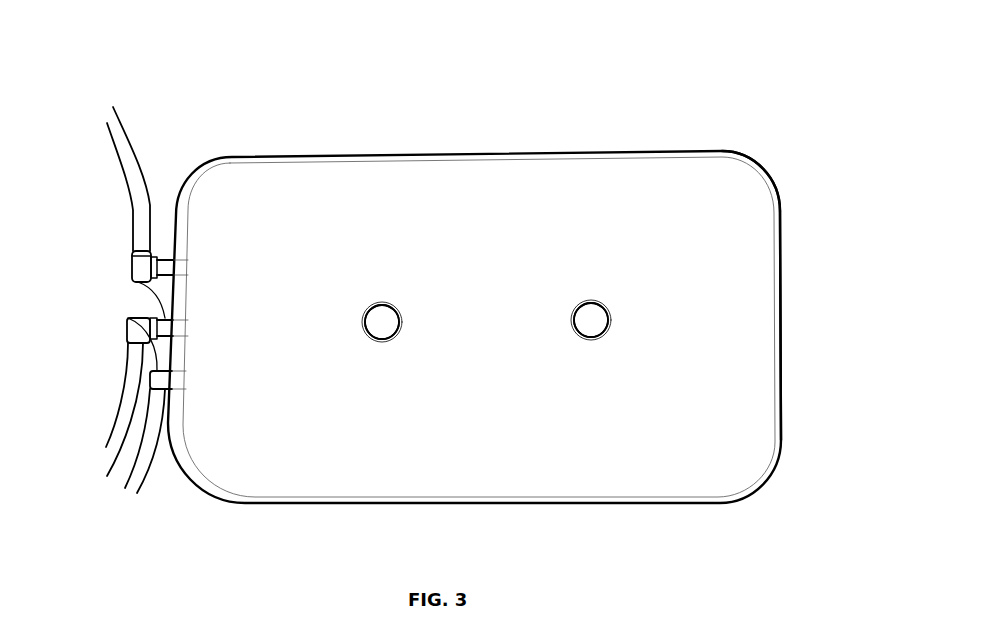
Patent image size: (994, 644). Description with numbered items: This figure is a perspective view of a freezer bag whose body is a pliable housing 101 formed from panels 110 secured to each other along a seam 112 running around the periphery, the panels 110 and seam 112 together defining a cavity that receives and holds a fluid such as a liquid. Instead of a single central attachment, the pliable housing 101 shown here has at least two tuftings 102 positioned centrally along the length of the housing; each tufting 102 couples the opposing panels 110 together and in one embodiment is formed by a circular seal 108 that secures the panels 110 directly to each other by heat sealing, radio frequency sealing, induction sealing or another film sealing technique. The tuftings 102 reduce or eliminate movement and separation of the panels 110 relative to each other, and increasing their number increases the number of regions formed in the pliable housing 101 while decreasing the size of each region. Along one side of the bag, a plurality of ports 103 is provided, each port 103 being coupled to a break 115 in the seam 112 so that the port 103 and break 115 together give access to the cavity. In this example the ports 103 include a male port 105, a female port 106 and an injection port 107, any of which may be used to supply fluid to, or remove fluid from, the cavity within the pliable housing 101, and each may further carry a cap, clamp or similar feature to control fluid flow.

The pliable housing 101 is at (646, 146).
The tufting 102 is at (382, 328).
The ports 103 is at (167, 282).
The male port 105 is at (132, 215).
The female port 106 is at (127, 360).
The injection port 107 is at (139, 451).
The circular seal 108 is at (382, 302).
The panels 110 is at (762, 321).
The seam 112 is at (752, 158).
The break 115 is at (183, 386).